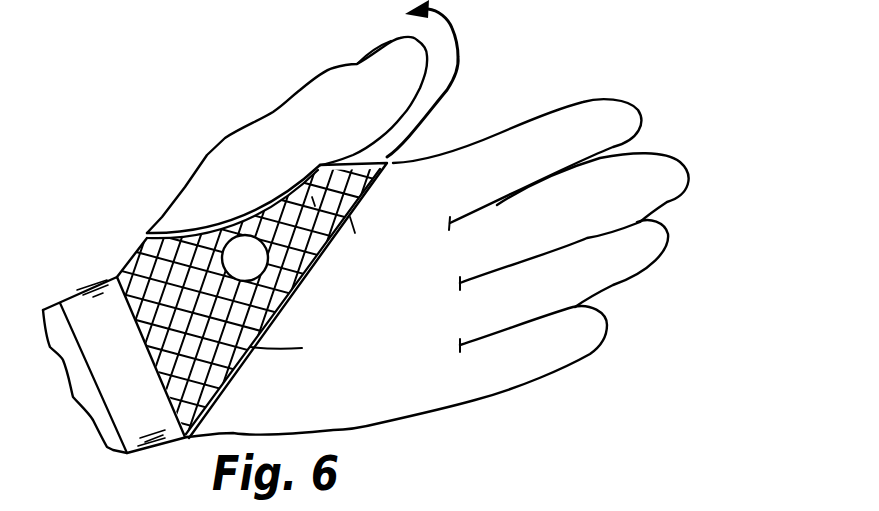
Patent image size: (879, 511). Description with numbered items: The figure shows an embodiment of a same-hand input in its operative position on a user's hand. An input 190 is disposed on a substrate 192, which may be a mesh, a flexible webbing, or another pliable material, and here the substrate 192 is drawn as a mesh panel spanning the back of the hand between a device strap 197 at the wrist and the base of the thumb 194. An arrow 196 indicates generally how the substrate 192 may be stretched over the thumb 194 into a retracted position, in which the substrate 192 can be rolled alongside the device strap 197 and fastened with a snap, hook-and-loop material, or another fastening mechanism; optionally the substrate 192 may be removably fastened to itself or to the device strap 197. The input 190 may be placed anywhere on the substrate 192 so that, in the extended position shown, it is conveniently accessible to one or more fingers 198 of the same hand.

The input 190 is at (250, 220).
The substrate 192 is at (138, 253).
The thumb 194 is at (337, 72).
The arrow 196 is at (459, 45).
The device strap 197 is at (103, 277).
The fingers 198 is at (635, 105).